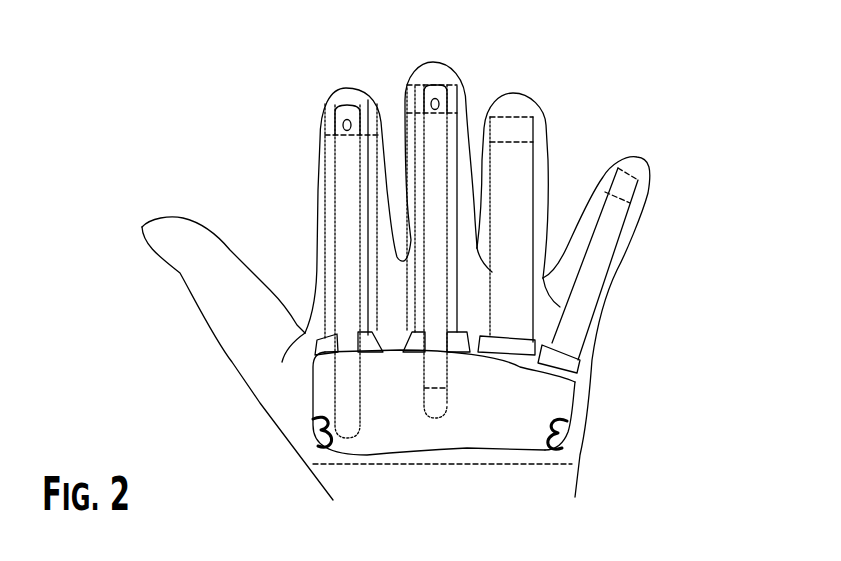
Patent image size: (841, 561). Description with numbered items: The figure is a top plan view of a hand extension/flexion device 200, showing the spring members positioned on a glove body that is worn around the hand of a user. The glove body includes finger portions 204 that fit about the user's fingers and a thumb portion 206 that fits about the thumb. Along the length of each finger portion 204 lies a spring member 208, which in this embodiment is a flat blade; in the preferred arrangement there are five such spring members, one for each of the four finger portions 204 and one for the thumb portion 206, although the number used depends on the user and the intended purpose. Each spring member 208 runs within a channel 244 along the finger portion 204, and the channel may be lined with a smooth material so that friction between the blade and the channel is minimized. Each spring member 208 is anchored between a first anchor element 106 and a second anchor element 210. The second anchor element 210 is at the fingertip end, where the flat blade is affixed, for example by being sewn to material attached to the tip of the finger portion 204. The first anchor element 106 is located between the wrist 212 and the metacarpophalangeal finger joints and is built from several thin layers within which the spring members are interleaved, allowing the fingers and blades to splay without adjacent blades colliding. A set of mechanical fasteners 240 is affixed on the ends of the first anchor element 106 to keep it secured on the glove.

The hand extension/flexion device 200 is at (664, 230).
The finger portion 204 is at (545, 165).
The thumb portion 206 is at (198, 288).
The spring member 208 is at (333, 194).
The second anchor element 210 is at (362, 106).
The channel 244 is at (318, 152).
The first anchor element 106 is at (313, 393).
The mechanical fasteners 240 is at (318, 437).
The wrist 212 is at (550, 480).